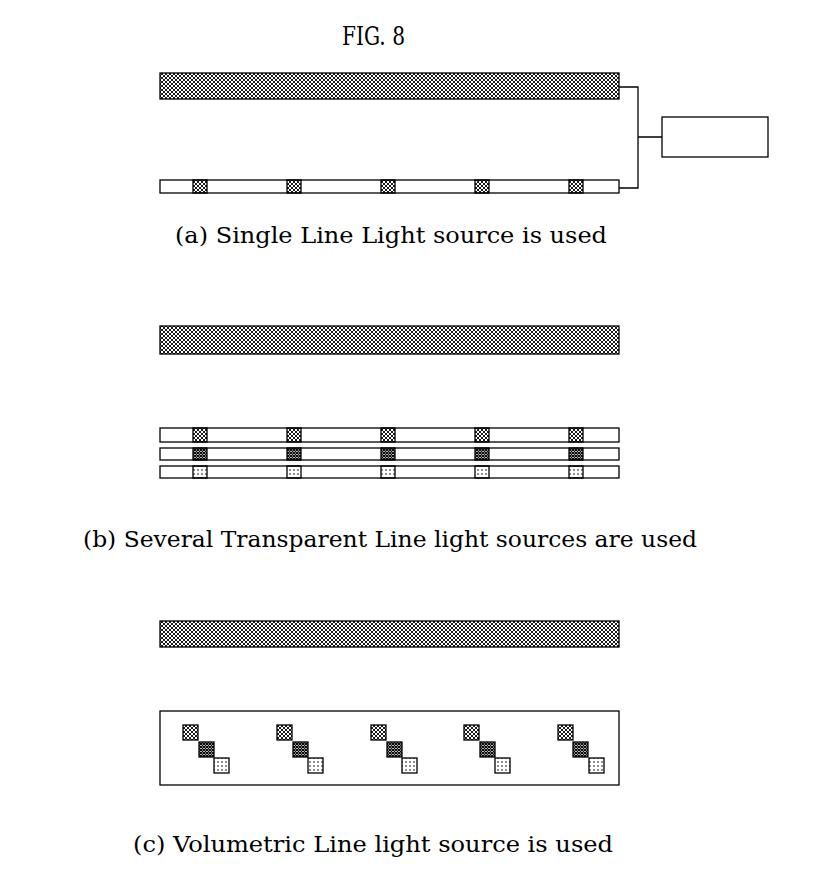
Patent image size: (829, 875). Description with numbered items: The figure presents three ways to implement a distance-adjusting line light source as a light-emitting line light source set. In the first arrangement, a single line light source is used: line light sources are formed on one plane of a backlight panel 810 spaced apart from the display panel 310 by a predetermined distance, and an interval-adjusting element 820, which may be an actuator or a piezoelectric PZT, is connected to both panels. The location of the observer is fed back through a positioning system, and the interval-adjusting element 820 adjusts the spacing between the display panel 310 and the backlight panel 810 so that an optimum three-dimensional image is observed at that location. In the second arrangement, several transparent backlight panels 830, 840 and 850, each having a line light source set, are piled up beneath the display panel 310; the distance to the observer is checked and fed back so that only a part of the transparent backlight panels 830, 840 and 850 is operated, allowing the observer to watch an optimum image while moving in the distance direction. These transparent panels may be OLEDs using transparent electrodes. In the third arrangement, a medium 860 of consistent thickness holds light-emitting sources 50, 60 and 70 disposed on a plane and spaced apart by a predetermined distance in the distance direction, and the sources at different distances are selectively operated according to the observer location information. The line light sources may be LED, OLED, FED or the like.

The display panel 310 is at (362, 360).
The backlight panel 810 is at (362, 187).
The interval-adjusting element 820 is at (693, 137).
The transparent backlight panel 830 is at (158, 435).
The transparent backlight panel 840 is at (158, 445).
The transparent backlight panel 850 is at (622, 471).
The medium 860 is at (428, 747).
The light-emitting source 50 is at (579, 732).
The light-emitting source 60 is at (593, 749).
The light-emitting source 70 is at (609, 766).